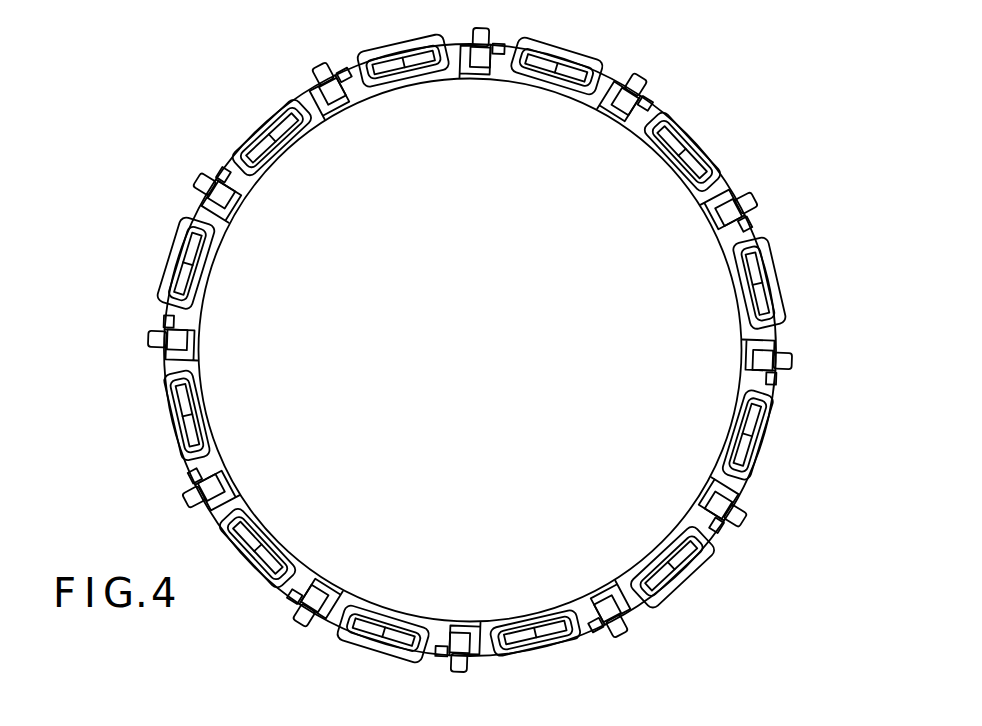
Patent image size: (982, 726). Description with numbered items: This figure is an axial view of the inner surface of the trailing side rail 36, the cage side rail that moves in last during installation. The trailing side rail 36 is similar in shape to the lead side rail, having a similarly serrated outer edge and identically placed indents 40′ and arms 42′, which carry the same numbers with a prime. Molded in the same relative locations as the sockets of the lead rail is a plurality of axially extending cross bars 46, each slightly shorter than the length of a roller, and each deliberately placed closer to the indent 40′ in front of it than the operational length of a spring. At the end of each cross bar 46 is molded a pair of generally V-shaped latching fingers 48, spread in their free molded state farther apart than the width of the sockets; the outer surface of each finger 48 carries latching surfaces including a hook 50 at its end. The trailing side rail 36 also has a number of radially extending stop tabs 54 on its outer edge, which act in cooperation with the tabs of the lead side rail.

The trailing side rail 36 is at (226, 157).
The indent 40′ is at (563, 93).
The arm 42′ is at (678, 172).
The cross bar 46 is at (316, 72).
The latching finger 48 is at (338, 80).
The hook 50 is at (358, 92).
The stop tab 54 is at (640, 84).